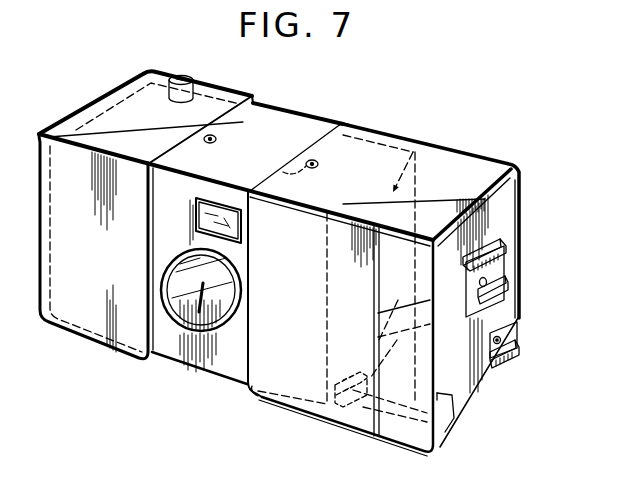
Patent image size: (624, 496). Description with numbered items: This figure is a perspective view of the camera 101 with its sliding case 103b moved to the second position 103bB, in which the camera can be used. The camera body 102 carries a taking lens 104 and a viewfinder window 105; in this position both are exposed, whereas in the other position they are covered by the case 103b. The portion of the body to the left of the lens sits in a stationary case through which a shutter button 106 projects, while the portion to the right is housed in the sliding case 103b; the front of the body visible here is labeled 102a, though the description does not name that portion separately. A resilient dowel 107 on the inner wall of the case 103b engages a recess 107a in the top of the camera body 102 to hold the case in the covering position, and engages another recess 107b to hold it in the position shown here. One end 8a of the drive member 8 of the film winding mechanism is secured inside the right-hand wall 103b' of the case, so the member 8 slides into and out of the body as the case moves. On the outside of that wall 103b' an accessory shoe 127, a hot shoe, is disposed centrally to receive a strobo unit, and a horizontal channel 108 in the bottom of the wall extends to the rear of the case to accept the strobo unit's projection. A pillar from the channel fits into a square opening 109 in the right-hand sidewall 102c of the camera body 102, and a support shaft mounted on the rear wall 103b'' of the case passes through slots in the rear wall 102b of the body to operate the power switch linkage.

The camera 101 is at (98, 84).
The shutter button 106 is at (184, 76).
The camera body 102 is at (271, 118).
The lid front panel 102a is at (168, 342).
The rear wall 102b is at (311, 120).
The right-hand sidewall 102c is at (417, 183).
The resilient dowel 107 is at (283, 172).
The recess 107a is at (217, 141).
The recess 107b is at (318, 165).
The sliding case 103b is at (333, 289).
The right-hand wall 103b' is at (512, 285).
The rear wall 103b'' is at (560, 245).
The second position 103bB is at (259, 411).
The accessory shoe 127 is at (504, 254).
The horizontal channel 108 is at (513, 338).
The drive member 8 is at (357, 402).
The end of drive member 8a is at (452, 440).
The square opening 109 is at (405, 298).
The taking lens 104 is at (238, 310).
The window 105 is at (240, 235).